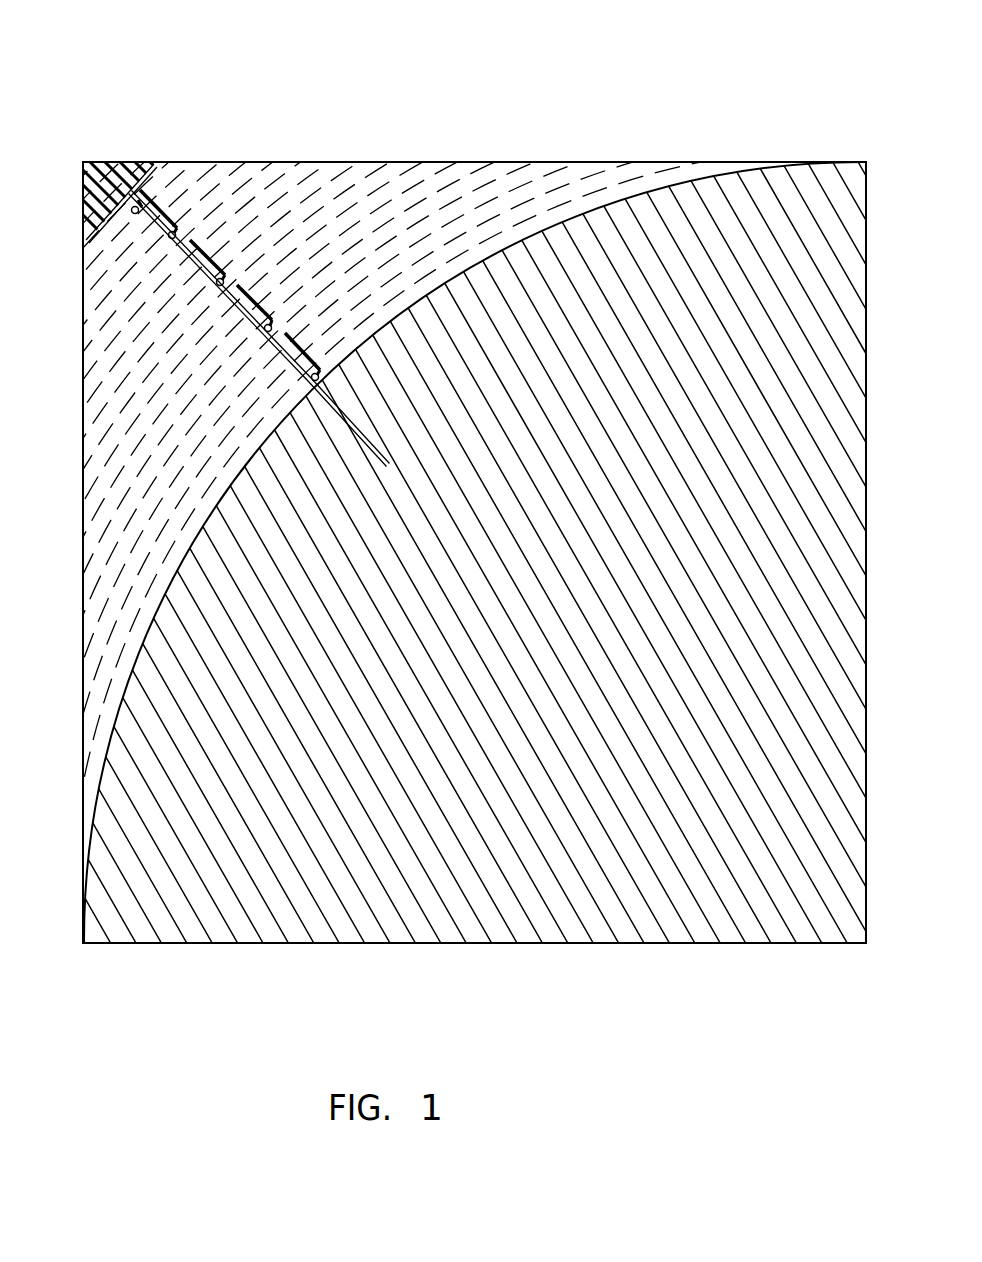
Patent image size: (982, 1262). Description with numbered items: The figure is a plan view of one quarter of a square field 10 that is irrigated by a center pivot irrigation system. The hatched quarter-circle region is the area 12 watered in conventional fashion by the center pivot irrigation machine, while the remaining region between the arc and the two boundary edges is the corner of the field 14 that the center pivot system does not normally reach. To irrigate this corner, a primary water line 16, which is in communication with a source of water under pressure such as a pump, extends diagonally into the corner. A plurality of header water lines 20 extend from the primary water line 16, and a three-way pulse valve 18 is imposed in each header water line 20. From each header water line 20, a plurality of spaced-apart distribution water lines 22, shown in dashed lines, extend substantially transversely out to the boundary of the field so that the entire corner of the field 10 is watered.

The square field 10 is at (641, 128).
The area watered by center pivot irrigation machine 12 is at (740, 230).
The corner of the field 14 is at (382, 170).
The primary water line 16 is at (362, 438).
The three-way pulse valve 18 is at (155, 170).
The header water lines 20 is at (320, 370).
The distribution water lines 22 is at (458, 202).